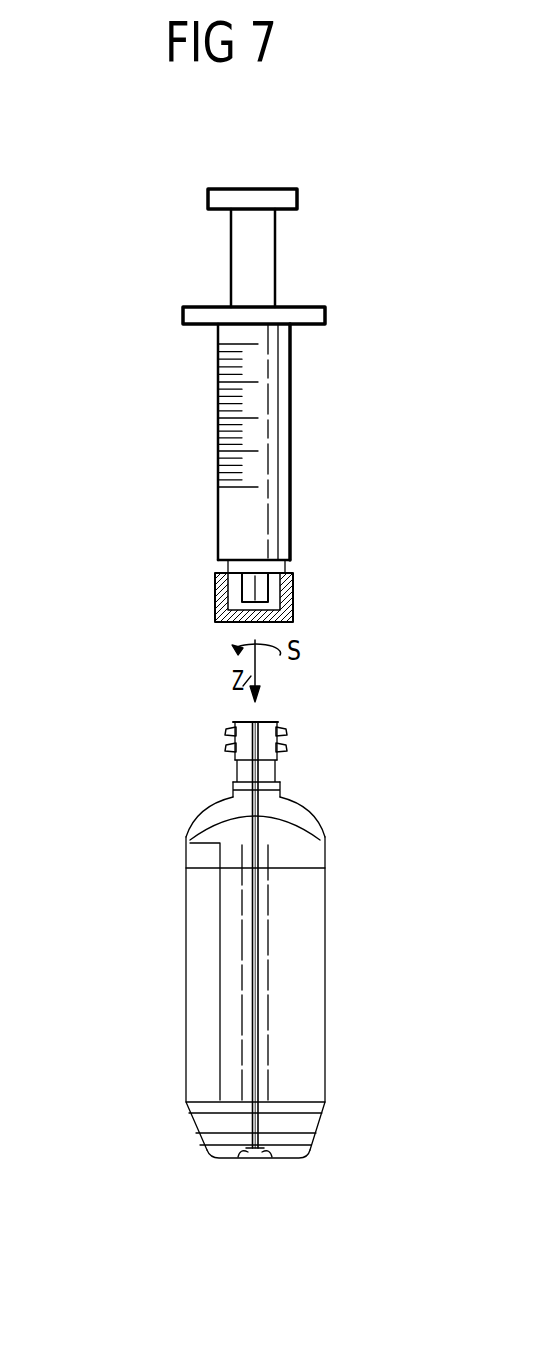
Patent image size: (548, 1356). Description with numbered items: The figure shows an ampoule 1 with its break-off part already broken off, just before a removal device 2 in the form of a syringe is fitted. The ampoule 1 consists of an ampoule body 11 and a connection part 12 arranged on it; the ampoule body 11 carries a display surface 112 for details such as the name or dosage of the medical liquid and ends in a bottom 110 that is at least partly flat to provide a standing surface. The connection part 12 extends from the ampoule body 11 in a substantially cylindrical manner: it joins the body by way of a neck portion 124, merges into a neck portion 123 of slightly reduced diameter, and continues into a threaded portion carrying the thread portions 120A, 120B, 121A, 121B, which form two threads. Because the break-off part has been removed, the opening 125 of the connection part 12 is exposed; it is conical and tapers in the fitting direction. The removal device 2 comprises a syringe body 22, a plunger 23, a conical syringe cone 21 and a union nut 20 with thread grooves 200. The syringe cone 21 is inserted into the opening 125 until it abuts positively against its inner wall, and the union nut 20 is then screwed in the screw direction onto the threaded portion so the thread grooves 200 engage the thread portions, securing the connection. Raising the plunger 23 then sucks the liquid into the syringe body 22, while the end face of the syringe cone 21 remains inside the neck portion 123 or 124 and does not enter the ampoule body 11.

The ampoule 1 is at (249, 949).
The ampoule body 11 is at (236, 949).
The bottom 110 is at (190, 1135).
The display surface 112 is at (197, 1010).
The connection part 12 is at (261, 745).
The thread portion 120A is at (280, 728).
The thread portion 120B is at (232, 728).
The thread portion 121A is at (282, 745).
The thread portion 121B is at (228, 745).
The neck portion 123 is at (262, 772).
The neck portion 124 is at (283, 793).
The opening 125 is at (260, 722).
The removal device 2 is at (255, 444).
The union nut 20 is at (255, 597).
The thread grooves 200 is at (293, 610).
The syringe cone 21 is at (290, 578).
The syringe body 22 is at (218, 512).
The plunger 23 is at (242, 257).